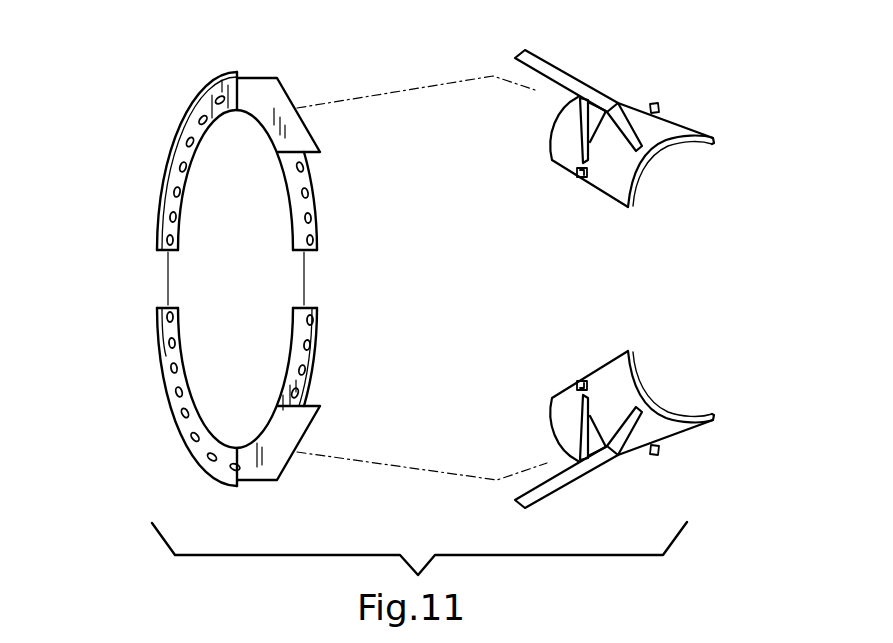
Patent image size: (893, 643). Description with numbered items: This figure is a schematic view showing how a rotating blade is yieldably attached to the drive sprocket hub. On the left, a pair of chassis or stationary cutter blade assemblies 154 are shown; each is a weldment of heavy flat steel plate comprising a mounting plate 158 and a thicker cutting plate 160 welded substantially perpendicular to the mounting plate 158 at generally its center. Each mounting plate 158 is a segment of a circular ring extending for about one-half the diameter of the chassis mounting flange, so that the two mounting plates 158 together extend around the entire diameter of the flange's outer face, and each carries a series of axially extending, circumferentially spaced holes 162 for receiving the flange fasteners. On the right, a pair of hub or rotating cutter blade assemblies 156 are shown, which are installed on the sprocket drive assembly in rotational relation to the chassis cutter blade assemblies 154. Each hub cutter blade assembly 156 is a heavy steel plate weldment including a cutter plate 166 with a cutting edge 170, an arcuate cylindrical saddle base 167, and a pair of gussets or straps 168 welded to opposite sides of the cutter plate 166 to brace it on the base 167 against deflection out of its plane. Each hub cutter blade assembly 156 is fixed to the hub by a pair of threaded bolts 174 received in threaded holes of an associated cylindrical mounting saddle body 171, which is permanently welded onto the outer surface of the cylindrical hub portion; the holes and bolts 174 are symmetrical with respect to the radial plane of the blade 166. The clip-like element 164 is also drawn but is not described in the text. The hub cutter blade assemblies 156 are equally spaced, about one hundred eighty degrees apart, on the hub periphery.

The chassis cutter blade assembly 154 is at (170, 130).
The hub cutter blade assembly 156 is at (604, 268).
The mounting plate 158 is at (172, 202).
The cutting plate 160 is at (260, 92).
The holes 162 is at (172, 217).
The clip 164 is at (284, 90).
The cutter plate 166 is at (568, 97).
The saddle base 167 is at (672, 122).
The gussets or straps 168 is at (597, 132).
The cutting edge 170 is at (537, 80).
The mounting saddle body 171 is at (678, 148).
The threaded bolts 174 is at (655, 105).